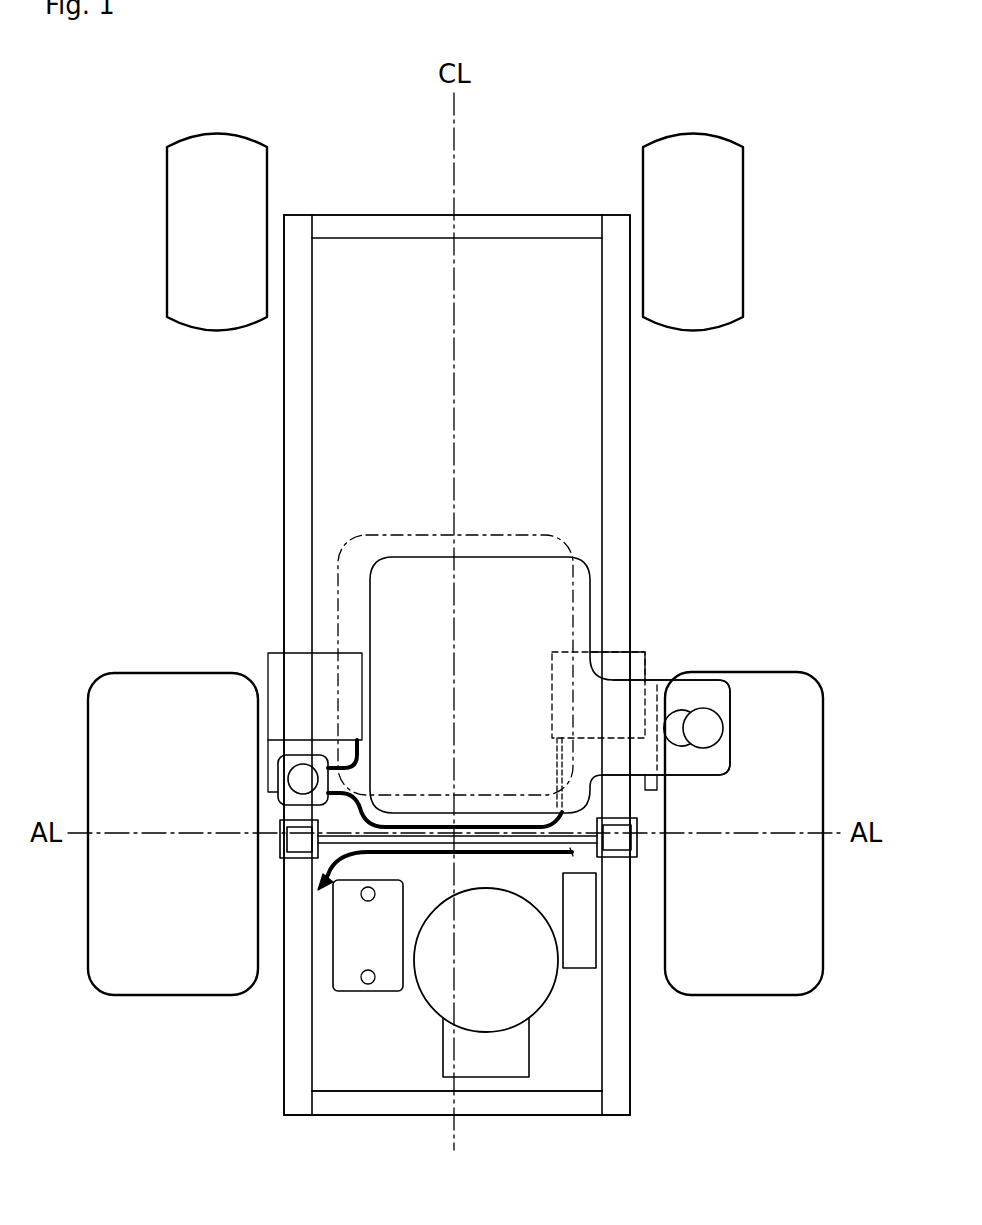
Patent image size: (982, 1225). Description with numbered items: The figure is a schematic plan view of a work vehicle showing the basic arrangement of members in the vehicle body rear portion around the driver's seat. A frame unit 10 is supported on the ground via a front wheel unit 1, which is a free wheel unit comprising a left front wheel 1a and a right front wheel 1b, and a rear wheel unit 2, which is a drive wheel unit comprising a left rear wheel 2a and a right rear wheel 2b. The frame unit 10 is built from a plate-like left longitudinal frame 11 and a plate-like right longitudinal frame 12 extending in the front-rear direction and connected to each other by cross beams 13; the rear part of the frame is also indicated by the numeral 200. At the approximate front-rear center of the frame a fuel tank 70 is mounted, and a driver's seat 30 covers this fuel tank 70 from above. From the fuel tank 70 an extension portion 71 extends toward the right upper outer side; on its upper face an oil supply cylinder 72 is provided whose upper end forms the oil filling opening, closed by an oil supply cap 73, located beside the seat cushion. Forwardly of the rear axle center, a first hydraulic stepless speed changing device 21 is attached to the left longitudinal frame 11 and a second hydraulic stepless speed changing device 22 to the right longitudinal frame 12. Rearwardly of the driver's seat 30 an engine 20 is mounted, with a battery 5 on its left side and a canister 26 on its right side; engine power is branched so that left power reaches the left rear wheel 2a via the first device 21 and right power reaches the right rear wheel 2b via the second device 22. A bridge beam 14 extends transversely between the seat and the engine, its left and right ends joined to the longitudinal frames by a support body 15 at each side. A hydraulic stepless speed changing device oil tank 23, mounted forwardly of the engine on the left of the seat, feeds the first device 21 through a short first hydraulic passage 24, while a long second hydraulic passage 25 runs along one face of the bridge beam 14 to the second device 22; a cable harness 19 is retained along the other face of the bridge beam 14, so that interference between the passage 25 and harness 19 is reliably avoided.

The front wheel unit 1 is at (457, 232).
The left front wheel 1a is at (178, 200).
The right front wheel 1b is at (735, 200).
The rear wheel unit 2 is at (455, 877).
The left rear wheel 2a is at (140, 993).
The right rear wheel 2b is at (770, 993).
The battery 5 is at (352, 992).
The frame unit 10 is at (283, 418).
The left longitudinal frame 11 is at (290, 485).
The right longitudinal frame 12 is at (630, 455).
The cross beams 13 is at (527, 225).
The bridge beam 14 is at (505, 838).
The support body 15 is at (280, 850).
The cable harness 19 is at (518, 858).
The engine 20 is at (505, 1067).
The rear frame portion 200 is at (407, 1063).
The first hydraulic stepless speed changing device 21 is at (370, 690).
The second hydraulic stepless speed changing device 22 is at (548, 690).
The hydraulic stepless speed changing device oil tank 23 is at (278, 772).
The first hydraulic passage 24 is at (355, 753).
The second hydraulic passage 25 is at (422, 822).
The canister 26 is at (580, 968).
The driver's seat 30 is at (400, 535).
The fuel tank 70 is at (515, 567).
The extension portion 71 is at (700, 690).
The oil supply cylinder 72 is at (680, 742).
The oil supply cap 73 is at (712, 730).